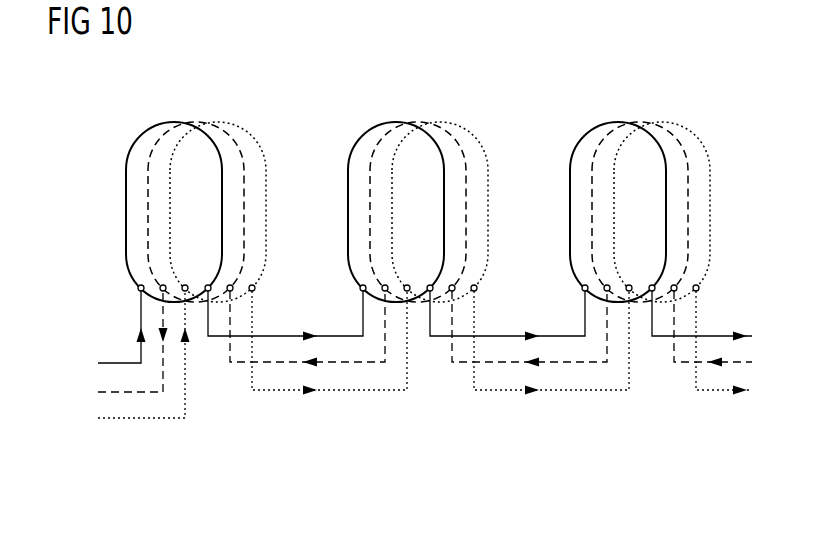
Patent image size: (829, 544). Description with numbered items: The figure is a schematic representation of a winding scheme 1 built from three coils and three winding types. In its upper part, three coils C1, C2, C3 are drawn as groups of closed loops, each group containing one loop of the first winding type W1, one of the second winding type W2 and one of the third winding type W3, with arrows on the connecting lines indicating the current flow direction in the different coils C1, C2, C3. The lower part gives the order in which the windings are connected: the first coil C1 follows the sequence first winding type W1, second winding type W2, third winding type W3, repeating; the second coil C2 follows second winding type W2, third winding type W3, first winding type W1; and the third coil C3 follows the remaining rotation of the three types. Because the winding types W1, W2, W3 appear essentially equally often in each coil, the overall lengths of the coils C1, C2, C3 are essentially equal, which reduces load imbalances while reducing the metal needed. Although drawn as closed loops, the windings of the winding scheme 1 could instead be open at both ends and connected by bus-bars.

The winding scheme 1 is at (673, 58).
The first winding type W1 is at (143, 130).
The second winding type W2 is at (196, 124).
The third winding type W3 is at (249, 130).
The first coil C1 is at (98, 363).
The second coil C2 is at (98, 392).
The third coil C3 is at (98, 418).